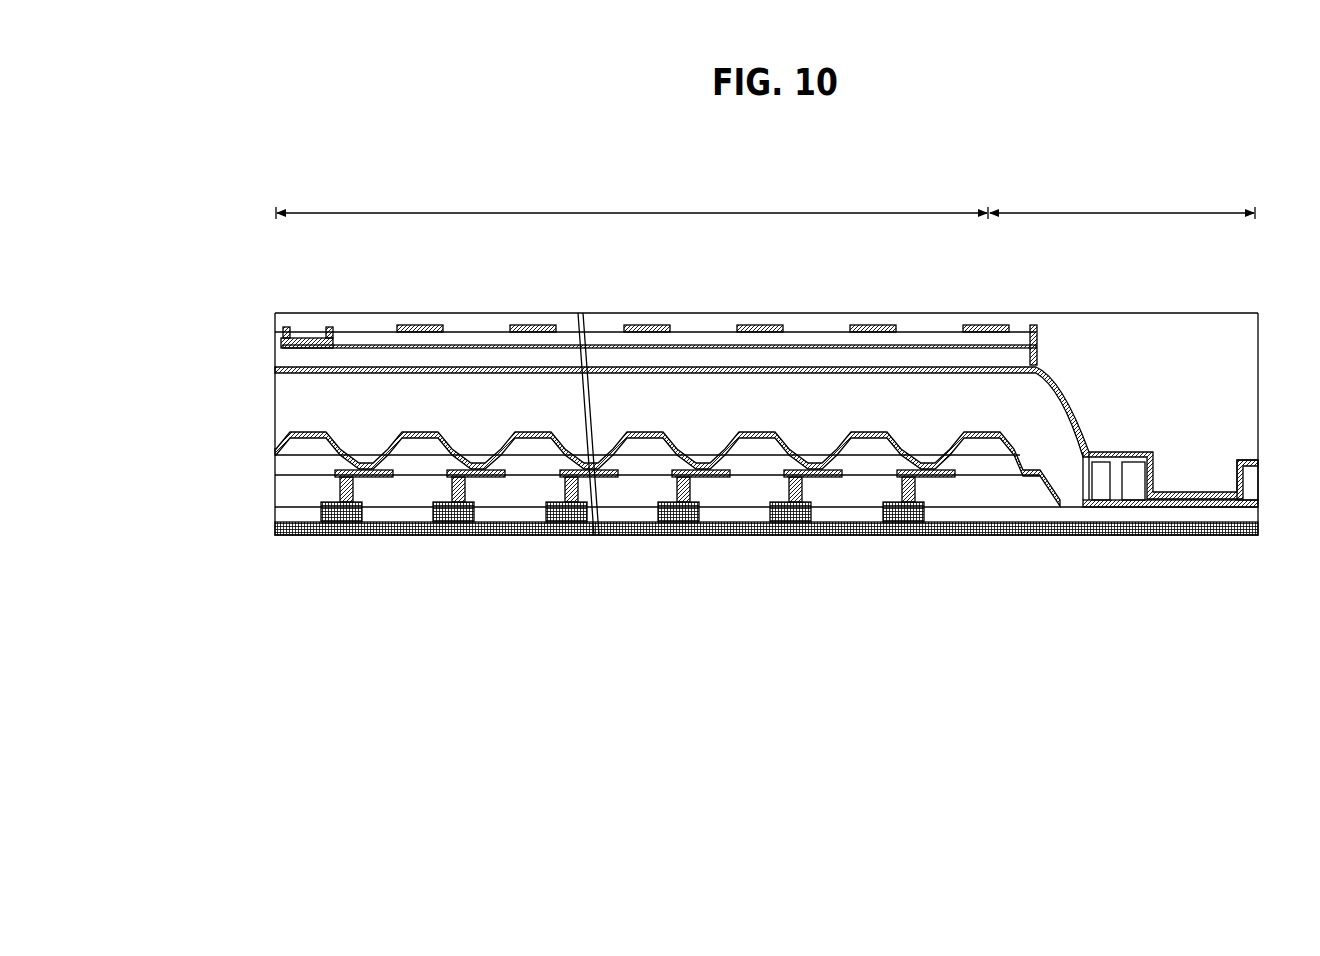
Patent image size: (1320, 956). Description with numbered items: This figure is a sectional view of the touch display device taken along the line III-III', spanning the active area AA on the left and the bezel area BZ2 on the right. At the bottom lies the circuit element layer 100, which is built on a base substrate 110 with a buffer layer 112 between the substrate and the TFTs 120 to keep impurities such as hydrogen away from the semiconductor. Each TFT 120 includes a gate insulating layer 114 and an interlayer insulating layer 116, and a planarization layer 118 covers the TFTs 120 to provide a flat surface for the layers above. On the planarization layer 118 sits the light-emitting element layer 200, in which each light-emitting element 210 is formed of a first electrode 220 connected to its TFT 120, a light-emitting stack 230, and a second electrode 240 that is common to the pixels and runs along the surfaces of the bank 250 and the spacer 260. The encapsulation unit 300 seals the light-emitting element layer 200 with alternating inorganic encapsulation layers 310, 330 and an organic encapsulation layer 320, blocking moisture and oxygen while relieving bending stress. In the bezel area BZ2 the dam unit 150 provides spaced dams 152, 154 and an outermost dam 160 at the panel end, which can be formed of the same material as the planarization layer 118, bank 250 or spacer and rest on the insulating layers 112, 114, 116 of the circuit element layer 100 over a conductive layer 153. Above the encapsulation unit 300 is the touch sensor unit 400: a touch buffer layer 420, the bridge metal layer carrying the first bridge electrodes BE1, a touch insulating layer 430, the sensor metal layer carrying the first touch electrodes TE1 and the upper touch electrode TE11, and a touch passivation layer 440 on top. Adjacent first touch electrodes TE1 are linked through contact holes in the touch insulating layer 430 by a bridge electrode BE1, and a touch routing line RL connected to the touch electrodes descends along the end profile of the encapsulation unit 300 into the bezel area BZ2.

The circuit element layer 100 is at (174, 482).
The base substrate 110 is at (718, 537).
The buffer layer 112 is at (276, 527).
The gate insulating layer 114 is at (718, 513).
The interlayer insulating layer 116 is at (276, 509).
The planarization layer 118 is at (275, 482).
The TFT 120 is at (339, 533).
The dam unit 150 is at (1138, 592).
The first dam 152 is at (1095, 507).
The pad conductive layer 153 is at (1187, 507).
The second dam 154 is at (1132, 507).
The third dam 160 is at (1245, 498).
The light-emitting element layer 200 is at (658, 636).
The light-emitting element 210 is at (540, 587).
The first electrode 220 is at (483, 480).
The light-emitting stack 230 is at (500, 482).
The second electrode 240 is at (522, 447).
The bank 250 is at (628, 470).
The spacer 260 is at (653, 450).
The encapsulation unit 300 is at (206, 378).
The inorganic encapsulation layer 310 is at (276, 450).
The organic encapsulation layer 320 is at (276, 411).
The inorganic encapsulation layer 330 is at (276, 377).
The touch sensor unit 400 is at (206, 283).
The touch buffer layer 420 is at (276, 367).
The touch insulating layer 430 is at (278, 346).
The touch passivation layer 440 is at (276, 329).
The first touch electrode TE1 is at (999, 325).
The upper touch electrode TE11 is at (315, 337).
The first bridge electrode BE1 is at (292, 338).
The touch routing line RL is at (1038, 362).
The active area AA is at (632, 201).
The bezel area BZ2 is at (1122, 201).
The section line end III is at (259, 556).
The section line end III' is at (1270, 556).